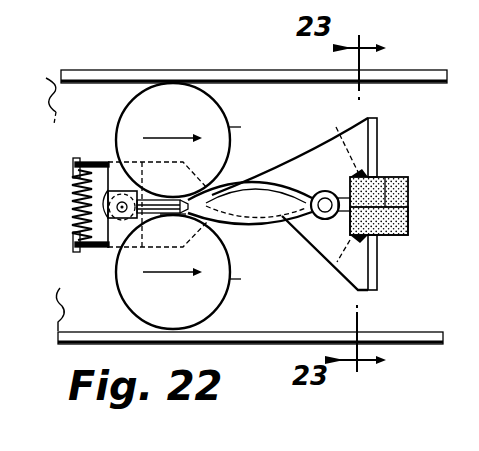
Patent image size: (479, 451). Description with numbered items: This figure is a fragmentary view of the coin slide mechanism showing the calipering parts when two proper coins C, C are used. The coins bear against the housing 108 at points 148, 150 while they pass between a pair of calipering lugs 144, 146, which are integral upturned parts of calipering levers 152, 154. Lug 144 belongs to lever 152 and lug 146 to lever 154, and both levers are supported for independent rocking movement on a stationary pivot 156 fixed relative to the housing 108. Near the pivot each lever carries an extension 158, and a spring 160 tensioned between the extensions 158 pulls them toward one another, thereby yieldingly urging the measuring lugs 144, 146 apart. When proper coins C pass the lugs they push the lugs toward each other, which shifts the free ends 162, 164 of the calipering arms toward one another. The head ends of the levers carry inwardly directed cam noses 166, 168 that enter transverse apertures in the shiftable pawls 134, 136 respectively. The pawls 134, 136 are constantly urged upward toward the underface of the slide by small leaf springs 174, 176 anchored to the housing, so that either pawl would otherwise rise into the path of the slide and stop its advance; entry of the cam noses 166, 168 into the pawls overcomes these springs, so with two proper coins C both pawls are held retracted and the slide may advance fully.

The housing 108 is at (234, 203).
The bearing point 148 is at (173, 85).
The bearing point 150 is at (172, 329).
The calipering lug 144 is at (165, 199).
The calipering lug 146 is at (174, 221).
The calipering lever 152 is at (232, 158).
The calipering lever 154 is at (232, 241).
The stationary pivot 156 is at (117, 207).
The extension 158 is at (98, 162).
The spring 160 is at (71, 195).
The free end of calipering arm 162 is at (379, 135).
The free end of calipering arm 164 is at (379, 270).
The cam nose 166 is at (372, 177).
The cam nose 168 is at (376, 238).
The pawl 134 is at (410, 189).
The pawl 136 is at (410, 219).
The leaf spring 174 is at (327, 148).
The leaf spring 176 is at (319, 261).
The proper coin C is at (243, 204).